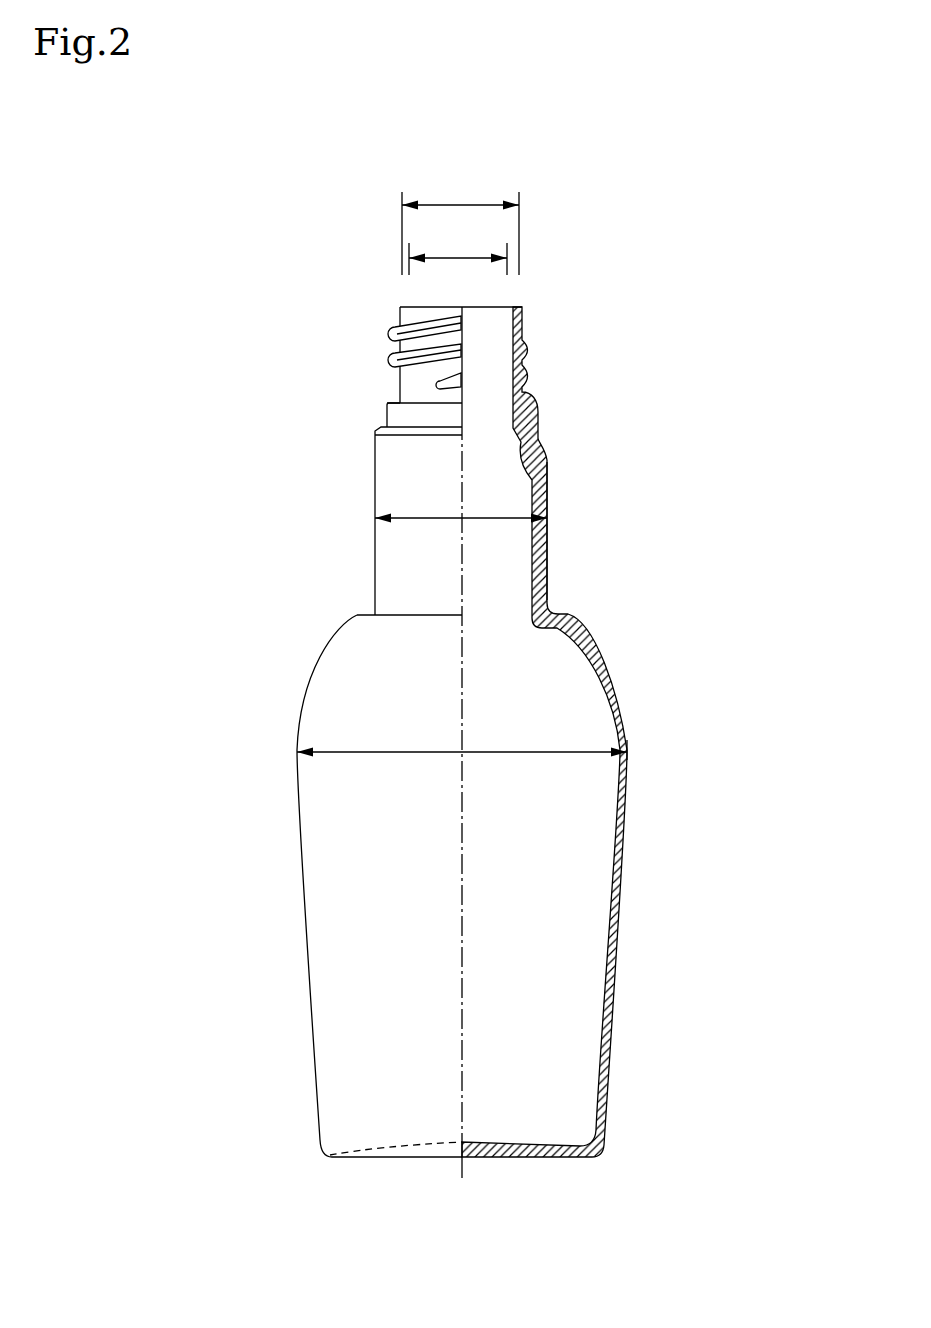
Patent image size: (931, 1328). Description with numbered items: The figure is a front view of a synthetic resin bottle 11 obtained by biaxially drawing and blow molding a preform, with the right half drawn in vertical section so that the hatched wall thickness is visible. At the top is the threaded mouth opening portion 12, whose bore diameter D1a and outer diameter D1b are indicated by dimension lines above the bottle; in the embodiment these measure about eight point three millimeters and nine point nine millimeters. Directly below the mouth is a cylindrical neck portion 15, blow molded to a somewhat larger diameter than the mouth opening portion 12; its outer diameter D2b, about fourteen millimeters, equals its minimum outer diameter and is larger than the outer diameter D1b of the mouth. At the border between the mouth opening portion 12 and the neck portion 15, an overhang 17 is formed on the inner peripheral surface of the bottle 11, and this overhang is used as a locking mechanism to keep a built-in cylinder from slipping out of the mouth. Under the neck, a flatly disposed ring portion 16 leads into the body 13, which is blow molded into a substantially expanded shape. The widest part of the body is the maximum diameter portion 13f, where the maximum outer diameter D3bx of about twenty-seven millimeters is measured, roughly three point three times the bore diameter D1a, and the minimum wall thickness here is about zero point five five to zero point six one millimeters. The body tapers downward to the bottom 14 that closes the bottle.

The bottle 11 is at (575, 302).
The mouth opening portion 12 is at (398, 328).
The body 13 is at (330, 882).
The maximum diameter portion 13f is at (645, 752).
The bottom 14 is at (343, 1128).
The neck portion 15 is at (392, 498).
The flat ring portion 16 is at (367, 614).
The overhang 17 is at (545, 484).
The bore diameter D1a is at (458, 247).
The outer diameter D1b is at (460, 221).
The outer diameter D2b is at (477, 518).
The maximum outer diameter D3bx is at (538, 752).